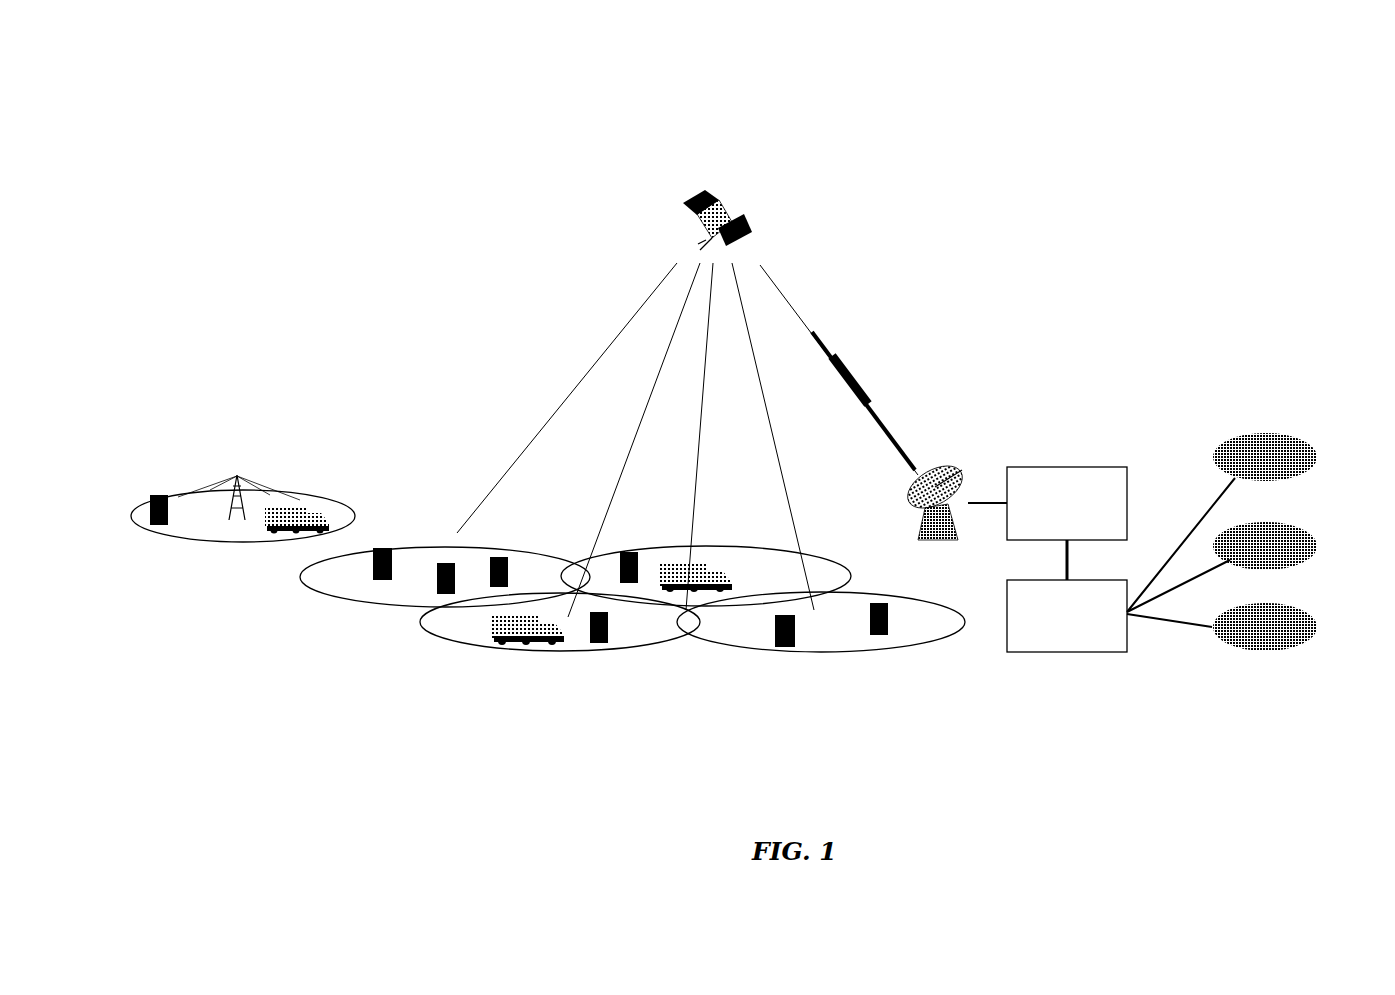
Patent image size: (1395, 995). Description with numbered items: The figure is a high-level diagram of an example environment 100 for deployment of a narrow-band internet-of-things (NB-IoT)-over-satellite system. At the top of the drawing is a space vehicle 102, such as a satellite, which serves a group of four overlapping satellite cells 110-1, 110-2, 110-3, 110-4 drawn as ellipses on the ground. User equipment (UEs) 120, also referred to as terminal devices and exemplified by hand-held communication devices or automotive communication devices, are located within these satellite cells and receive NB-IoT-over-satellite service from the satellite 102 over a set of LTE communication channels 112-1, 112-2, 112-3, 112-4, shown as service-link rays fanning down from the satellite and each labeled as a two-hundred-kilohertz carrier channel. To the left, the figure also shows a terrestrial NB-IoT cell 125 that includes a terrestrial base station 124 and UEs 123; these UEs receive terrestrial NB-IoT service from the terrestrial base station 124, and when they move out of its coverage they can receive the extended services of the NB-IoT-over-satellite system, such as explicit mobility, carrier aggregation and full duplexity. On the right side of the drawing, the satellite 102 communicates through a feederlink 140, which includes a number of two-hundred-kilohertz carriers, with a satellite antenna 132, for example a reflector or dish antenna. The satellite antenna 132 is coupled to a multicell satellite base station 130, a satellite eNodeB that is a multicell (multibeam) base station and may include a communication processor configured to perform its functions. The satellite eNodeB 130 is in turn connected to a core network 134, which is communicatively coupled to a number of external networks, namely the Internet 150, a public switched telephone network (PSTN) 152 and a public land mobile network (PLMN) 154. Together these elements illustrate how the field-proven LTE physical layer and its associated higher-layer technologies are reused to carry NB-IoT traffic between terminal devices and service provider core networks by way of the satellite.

The environment 100 is at (140, 107).
The space vehicle 102 is at (683, 212).
The satellite cell 110-1 is at (437, 545).
The satellite cell 110-2 is at (620, 648).
The satellite cell 110-3 is at (745, 543).
The satellite cell 110-4 is at (807, 648).
The LTE communication channel 112-1 is at (567, 398).
The LTE communication channel 112-2 is at (635, 440).
The LTE communication channel 112-3 is at (700, 436).
The LTE communication channel 112-4 is at (776, 436).
The user equipment 120 is at (378, 580).
The UEs 123 is at (320, 510).
The terrestrial base station 124 is at (240, 521).
The terrestrial NB-IoT cell 125 is at (133, 508).
The multicell satellite base station 130 is at (1097, 469).
The satellite antenna 132 is at (960, 470).
The core network 134 is at (1052, 653).
The feederlink 140 is at (878, 370).
The Internet 150 is at (1303, 452).
The public switched telephone network 152 is at (1303, 537).
The public land mobile network 154 is at (1303, 620).